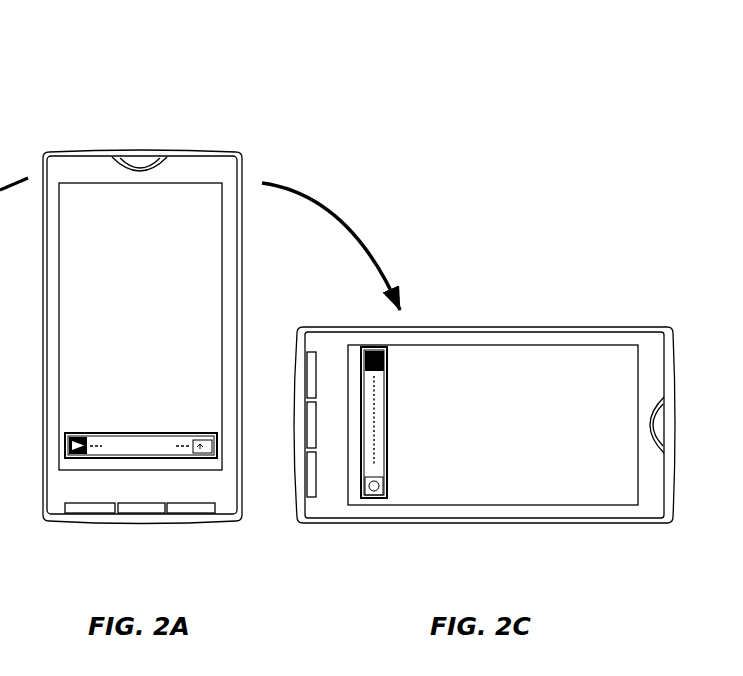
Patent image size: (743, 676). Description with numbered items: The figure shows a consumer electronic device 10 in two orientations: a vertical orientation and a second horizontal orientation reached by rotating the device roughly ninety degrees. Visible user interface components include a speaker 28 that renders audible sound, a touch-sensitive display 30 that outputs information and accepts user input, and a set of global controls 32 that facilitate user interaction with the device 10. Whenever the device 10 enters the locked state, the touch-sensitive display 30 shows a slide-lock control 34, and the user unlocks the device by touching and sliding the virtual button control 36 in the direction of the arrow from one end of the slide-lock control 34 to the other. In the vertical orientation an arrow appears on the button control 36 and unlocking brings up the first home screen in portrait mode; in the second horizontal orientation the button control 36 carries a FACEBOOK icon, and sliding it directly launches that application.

In FIG. 2A, the consumer electronic device 10 is at (276, 97).
In FIG. 2C, the consumer electronic device 10 is at (633, 277).
In FIG. 2A, the speaker 28 is at (135, 162).
In FIG. 2C, the speaker 28 is at (660, 425).
In FIG. 2A, the touch-sensitive display 30 is at (205, 197).
In FIG. 2C, the touch-sensitive display 30 is at (482, 358).
In FIG. 2A, the set of global controls 32 is at (77, 525).
In FIG. 2C, the set of global controls 32 is at (297, 469).
In FIG. 2A, the slide-lock control 34 is at (163, 430).
In FIG. 2C, the slide-lock control 34 is at (387, 465).
In FIG. 2A, the virtual button control 36 is at (77, 432).
In FIG. 2C, the virtual button control 36 is at (387, 360).